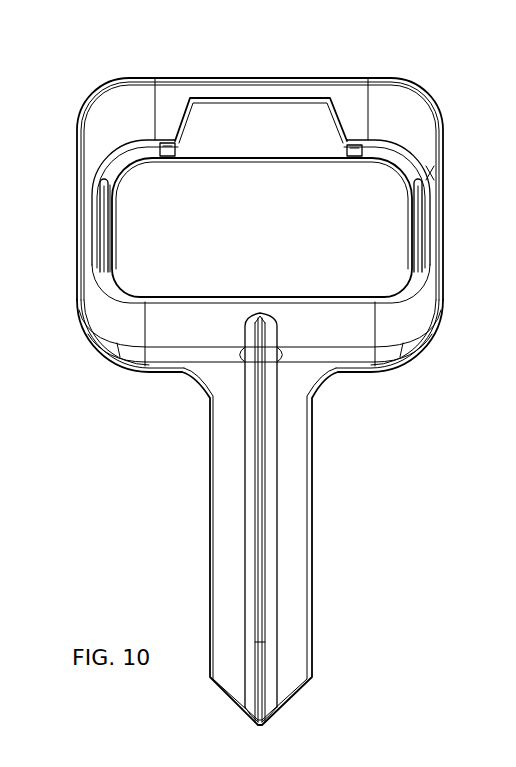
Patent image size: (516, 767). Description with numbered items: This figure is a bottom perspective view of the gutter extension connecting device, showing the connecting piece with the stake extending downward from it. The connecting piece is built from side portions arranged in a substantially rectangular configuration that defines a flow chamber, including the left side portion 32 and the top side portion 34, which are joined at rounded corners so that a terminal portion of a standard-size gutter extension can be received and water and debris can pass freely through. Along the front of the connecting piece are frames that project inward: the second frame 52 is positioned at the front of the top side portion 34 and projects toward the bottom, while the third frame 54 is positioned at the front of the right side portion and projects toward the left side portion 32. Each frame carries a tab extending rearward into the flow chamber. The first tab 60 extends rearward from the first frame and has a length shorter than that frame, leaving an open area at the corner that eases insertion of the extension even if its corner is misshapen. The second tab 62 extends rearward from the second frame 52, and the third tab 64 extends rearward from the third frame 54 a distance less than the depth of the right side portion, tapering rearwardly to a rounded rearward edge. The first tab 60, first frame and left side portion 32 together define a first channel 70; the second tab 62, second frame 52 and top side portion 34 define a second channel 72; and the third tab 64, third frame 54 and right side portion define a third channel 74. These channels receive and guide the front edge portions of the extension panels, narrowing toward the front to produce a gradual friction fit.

The left side portion 32 is at (79, 203).
The top side portion 34 is at (168, 98).
The second frame 52 is at (165, 141).
The third frame 54 is at (356, 150).
The first tab 60 is at (107, 218).
The second tab 62 is at (295, 133).
The third tab 64 is at (410, 200).
The first channel 70 is at (95, 164).
The second channel 72 is at (343, 112).
The third channel 74 is at (431, 172).